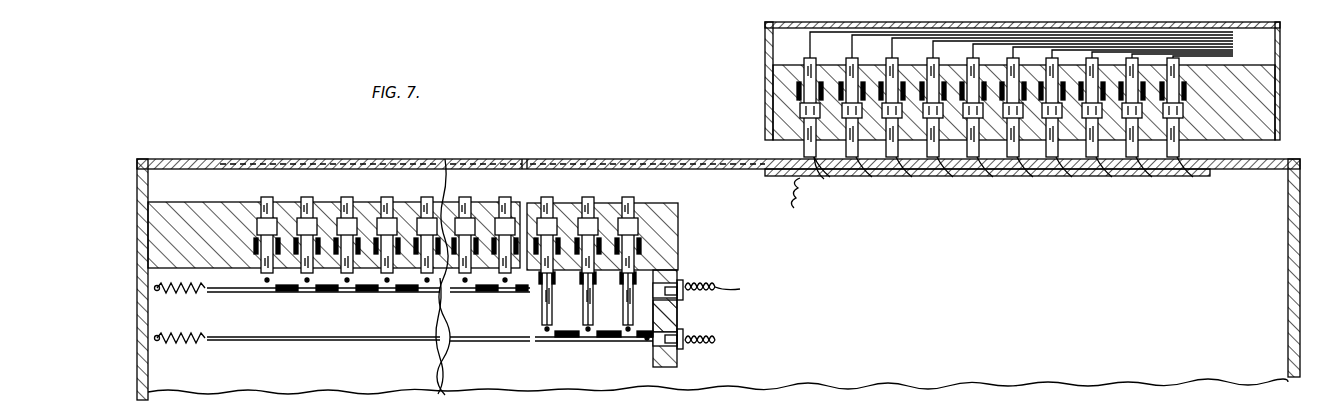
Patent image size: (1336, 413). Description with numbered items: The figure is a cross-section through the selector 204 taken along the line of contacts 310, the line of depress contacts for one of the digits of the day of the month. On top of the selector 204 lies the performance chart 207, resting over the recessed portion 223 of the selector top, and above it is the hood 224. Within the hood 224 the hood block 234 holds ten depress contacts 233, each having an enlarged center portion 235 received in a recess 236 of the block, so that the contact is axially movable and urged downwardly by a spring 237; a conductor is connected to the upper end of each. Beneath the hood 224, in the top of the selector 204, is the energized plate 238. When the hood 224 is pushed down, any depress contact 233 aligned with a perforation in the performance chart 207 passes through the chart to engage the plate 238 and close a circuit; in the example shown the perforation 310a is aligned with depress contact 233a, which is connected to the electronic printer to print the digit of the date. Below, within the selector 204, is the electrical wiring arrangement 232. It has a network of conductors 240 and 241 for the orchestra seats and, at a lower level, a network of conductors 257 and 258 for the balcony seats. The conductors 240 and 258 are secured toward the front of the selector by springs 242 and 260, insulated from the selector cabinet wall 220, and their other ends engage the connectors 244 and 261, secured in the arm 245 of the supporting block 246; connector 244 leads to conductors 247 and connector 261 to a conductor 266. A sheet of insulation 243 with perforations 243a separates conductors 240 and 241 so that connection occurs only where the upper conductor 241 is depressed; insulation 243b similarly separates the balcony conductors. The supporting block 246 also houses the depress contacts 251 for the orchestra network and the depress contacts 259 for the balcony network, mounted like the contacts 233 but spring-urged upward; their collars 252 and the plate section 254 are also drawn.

The selector 204 is at (181, 157).
The performance chart 207 is at (703, 158).
The selector cabinet wall 220 is at (138, 214).
The recessed portion 223 is at (238, 167).
The hood 224 is at (1280, 45).
The electrical wiring arrangement 232 is at (639, 353).
The depress contacts 233 is at (872, 160).
The depress contact 233a is at (828, 178).
The hood block 234 is at (1280, 98).
The enlarged center portion 235 is at (1183, 114).
The recess 236 is at (1182, 78).
The spring 237 is at (1182, 94).
The plate 238 is at (1028, 176).
The conductors 240 is at (356, 292).
The conductors 241 is at (308, 282).
The springs 242 is at (180, 290).
The sheet of insulation 243 is at (240, 293).
The perforations 243a is at (392, 292).
The lower contact bar 243b is at (576, 342).
The connectors 244 is at (688, 284).
The arm 245 is at (683, 363).
The supporting block 246 is at (678, 217).
The conductors 247 is at (729, 291).
The depress contacts 251 is at (308, 197).
The pin collar 252 is at (257, 245).
The plate section 254 is at (378, 168).
The conductors 257 is at (544, 327).
The conductors 258 is at (529, 341).
The depress contacts 259 is at (628, 197).
The spring 260 is at (182, 340).
The electrical connector 261 is at (683, 335).
The conductor 266 is at (726, 340).
The line of contacts 310 is at (788, 42).
The perforation 310a is at (812, 178).